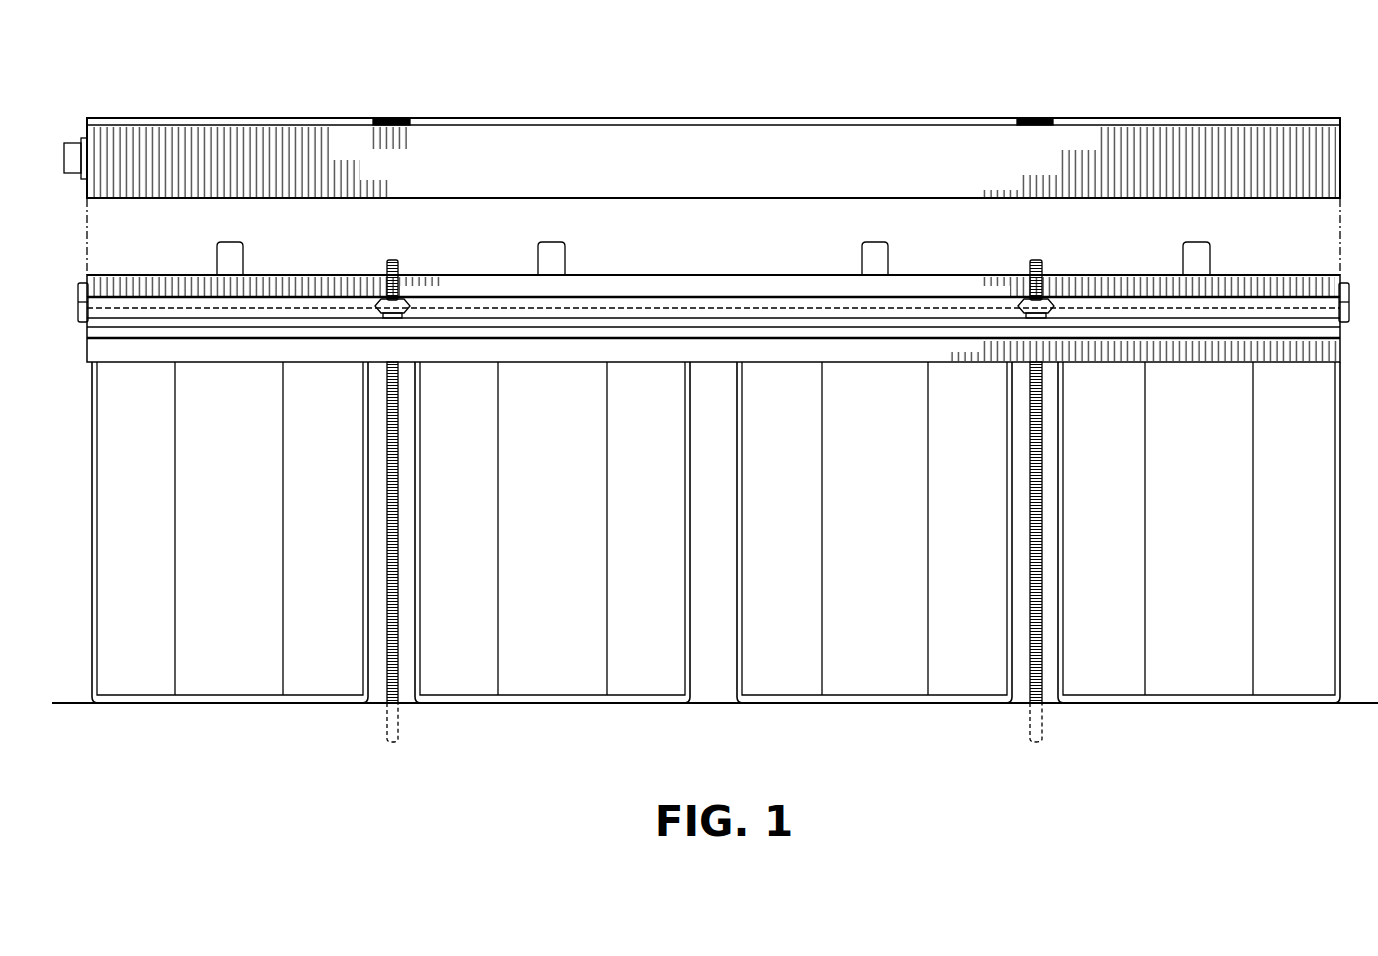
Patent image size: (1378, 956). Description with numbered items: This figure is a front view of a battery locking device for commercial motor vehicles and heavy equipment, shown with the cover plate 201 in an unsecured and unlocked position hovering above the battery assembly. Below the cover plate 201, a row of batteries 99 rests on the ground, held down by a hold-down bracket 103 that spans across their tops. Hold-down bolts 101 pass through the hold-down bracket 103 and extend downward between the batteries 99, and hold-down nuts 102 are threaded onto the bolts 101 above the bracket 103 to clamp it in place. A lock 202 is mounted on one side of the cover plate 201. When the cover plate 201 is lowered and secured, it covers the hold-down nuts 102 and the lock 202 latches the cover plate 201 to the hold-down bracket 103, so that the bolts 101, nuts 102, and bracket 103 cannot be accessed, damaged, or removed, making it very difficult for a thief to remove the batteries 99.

The battery 99 is at (222, 677).
The hold-down bolt 101 is at (400, 538).
The hold-down nut 102 is at (398, 302).
The hold-down bracket 103 is at (1278, 300).
The cover plate 201 is at (460, 158).
The lock 202 is at (72, 141).